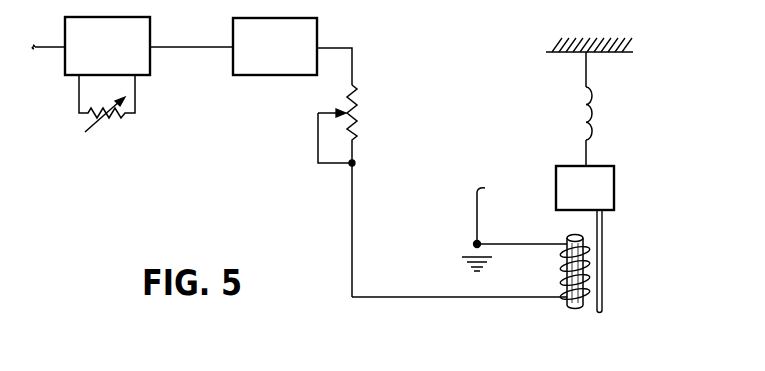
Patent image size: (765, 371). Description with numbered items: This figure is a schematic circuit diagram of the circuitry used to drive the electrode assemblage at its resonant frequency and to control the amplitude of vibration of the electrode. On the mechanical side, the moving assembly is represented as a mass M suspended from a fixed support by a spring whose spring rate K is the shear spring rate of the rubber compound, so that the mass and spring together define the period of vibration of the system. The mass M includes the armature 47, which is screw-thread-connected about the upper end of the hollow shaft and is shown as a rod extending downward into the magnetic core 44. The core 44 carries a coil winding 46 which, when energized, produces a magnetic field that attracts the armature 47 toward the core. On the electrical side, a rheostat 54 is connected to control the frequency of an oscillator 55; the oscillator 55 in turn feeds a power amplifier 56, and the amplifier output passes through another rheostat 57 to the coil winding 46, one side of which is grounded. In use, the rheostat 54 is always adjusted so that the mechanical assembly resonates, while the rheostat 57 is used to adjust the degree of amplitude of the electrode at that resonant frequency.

The slotted magnetic shell-type core 44 is at (572, 306).
The coil winding 46 is at (588, 250).
The armature 47 is at (603, 289).
The rheostat 54 is at (122, 120).
The oscillator 55 is at (151, 26).
The power amplifier 56 is at (318, 28).
The rheostat 57 is at (360, 114).
The spring rate K is at (594, 116).
The mass M is at (585, 188).